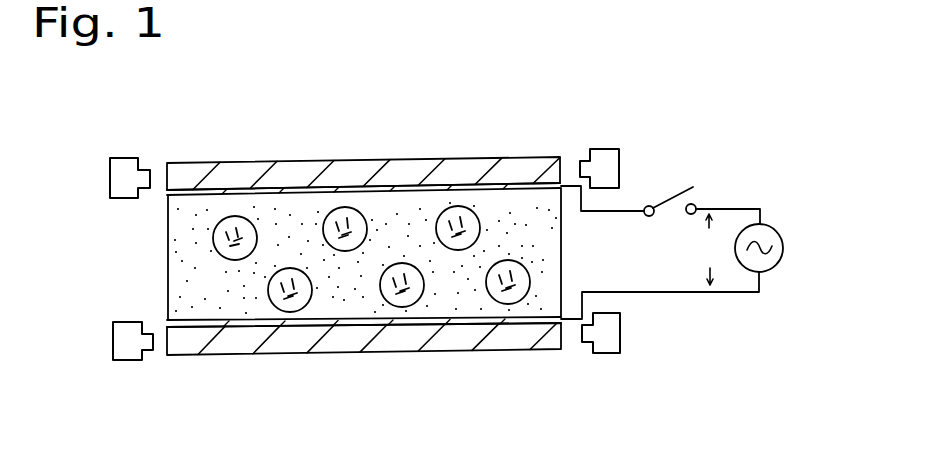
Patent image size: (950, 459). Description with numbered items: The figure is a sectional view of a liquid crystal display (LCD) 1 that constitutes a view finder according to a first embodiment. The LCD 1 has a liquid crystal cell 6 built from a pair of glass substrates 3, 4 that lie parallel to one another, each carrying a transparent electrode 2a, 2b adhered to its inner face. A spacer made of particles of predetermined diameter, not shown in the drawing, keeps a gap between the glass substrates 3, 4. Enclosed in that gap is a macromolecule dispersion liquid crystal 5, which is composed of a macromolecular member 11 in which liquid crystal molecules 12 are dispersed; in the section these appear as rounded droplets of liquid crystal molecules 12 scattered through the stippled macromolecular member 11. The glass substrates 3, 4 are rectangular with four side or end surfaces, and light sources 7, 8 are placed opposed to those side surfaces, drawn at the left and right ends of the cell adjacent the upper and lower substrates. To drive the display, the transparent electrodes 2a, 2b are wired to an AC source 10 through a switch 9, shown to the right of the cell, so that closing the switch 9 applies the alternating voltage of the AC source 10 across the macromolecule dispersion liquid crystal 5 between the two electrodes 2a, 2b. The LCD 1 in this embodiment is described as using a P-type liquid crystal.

The liquid crystal display 1 is at (446, 147).
The transparent electrode 2a is at (167, 194).
The transparent electrode 2b is at (168, 322).
The glass substrate 3 is at (254, 170).
The glass substrate 4 is at (238, 348).
The macromolecule dispersion liquid crystal 5 is at (168, 252).
The liquid crystal cell 6 is at (518, 157).
The light source 7 is at (120, 170).
The light source 8 is at (130, 360).
The switch 9 is at (667, 190).
The AC source 10 is at (777, 227).
The macromolecular member 11 is at (348, 300).
The liquid crystal molecules 12 is at (415, 306).